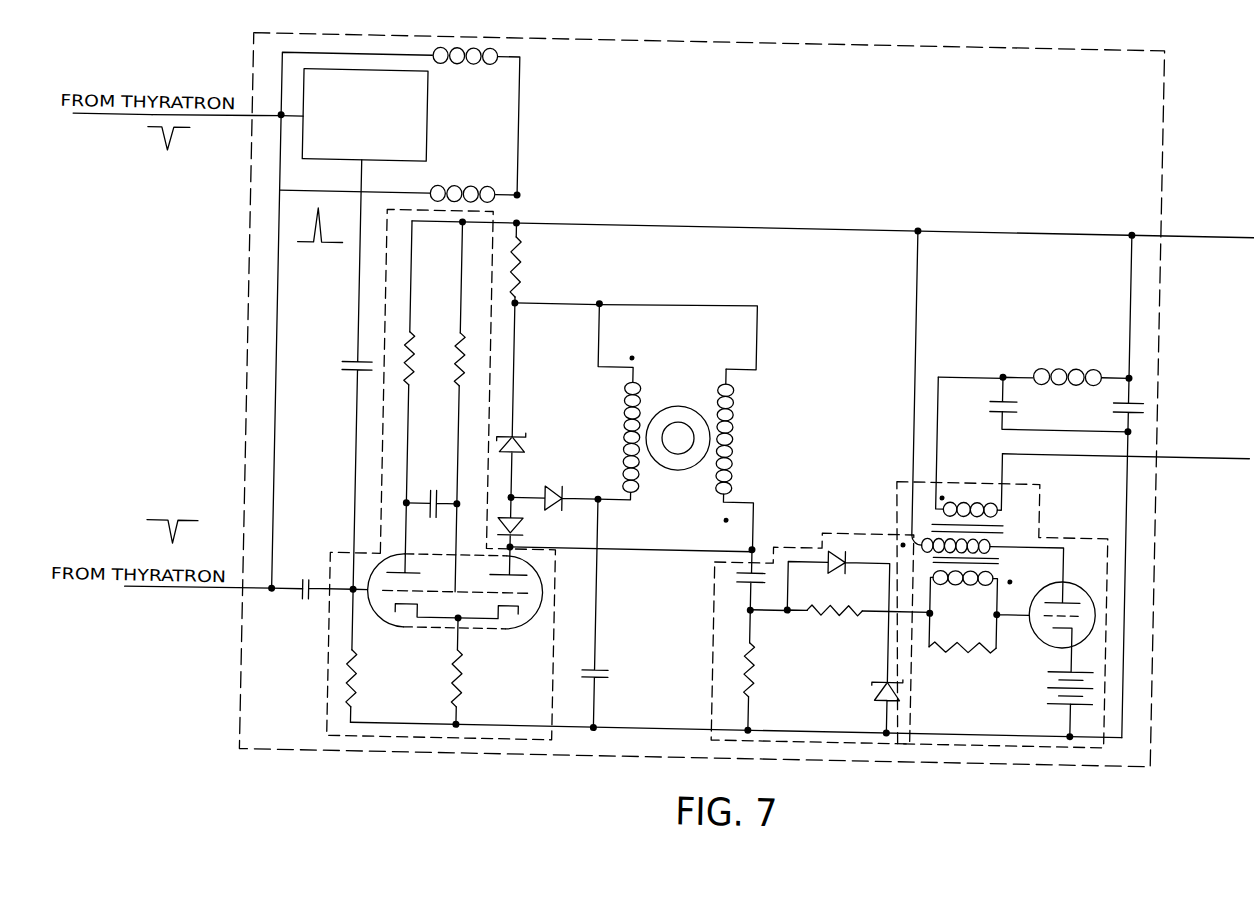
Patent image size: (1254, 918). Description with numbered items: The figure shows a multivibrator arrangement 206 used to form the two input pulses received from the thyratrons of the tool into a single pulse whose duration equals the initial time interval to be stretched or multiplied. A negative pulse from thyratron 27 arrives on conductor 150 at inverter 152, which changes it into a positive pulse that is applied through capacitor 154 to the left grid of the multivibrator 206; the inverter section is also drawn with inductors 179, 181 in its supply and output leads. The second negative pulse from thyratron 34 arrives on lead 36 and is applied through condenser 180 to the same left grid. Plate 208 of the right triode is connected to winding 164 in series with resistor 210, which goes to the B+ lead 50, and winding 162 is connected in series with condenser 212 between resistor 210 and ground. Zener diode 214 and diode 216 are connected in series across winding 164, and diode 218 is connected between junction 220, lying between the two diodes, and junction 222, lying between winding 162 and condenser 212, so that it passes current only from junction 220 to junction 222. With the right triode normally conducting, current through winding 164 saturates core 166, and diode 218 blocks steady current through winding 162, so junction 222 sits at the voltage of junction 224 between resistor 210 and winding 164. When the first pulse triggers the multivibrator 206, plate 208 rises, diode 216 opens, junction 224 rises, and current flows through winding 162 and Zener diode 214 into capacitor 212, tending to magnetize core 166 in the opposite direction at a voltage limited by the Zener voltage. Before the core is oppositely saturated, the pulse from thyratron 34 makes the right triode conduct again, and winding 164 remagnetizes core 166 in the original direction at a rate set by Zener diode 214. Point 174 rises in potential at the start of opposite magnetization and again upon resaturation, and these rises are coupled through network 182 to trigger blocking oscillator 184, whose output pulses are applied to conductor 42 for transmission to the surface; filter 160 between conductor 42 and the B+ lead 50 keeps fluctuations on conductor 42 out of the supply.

The thyratron 27 is at (228, 125).
The conductor 150 is at (81, 123).
The inverter 152 is at (425, 134).
The capacitor 154 is at (356, 365).
The inductor 179 is at (452, 64).
The inductor 181 is at (456, 180).
The thyratron 34 is at (198, 564).
The conductor 36 is at (228, 598).
The condenser 180 is at (318, 604).
The multivibrator arrangement 206 is at (337, 684).
The plate 208 is at (535, 566).
The resistor 210 is at (523, 268).
The junction 224 is at (523, 300).
The winding 162 is at (626, 398).
The winding 164 is at (739, 416).
The magnetic core 166 is at (659, 407).
The Zener diode 214 is at (531, 433).
The junction 220 is at (516, 498).
The diode 218 is at (565, 488).
The diode 216 is at (531, 531).
The junction 222 is at (604, 498).
The condenser 212 is at (614, 666).
The point 174 is at (758, 545).
The coupling network 182 is at (840, 649).
The blocking oscillator 184 is at (1036, 673).
The filter 160 is at (1081, 411).
The conductor 42 is at (1050, 444).
The B+ supply line 50 is at (1200, 224).